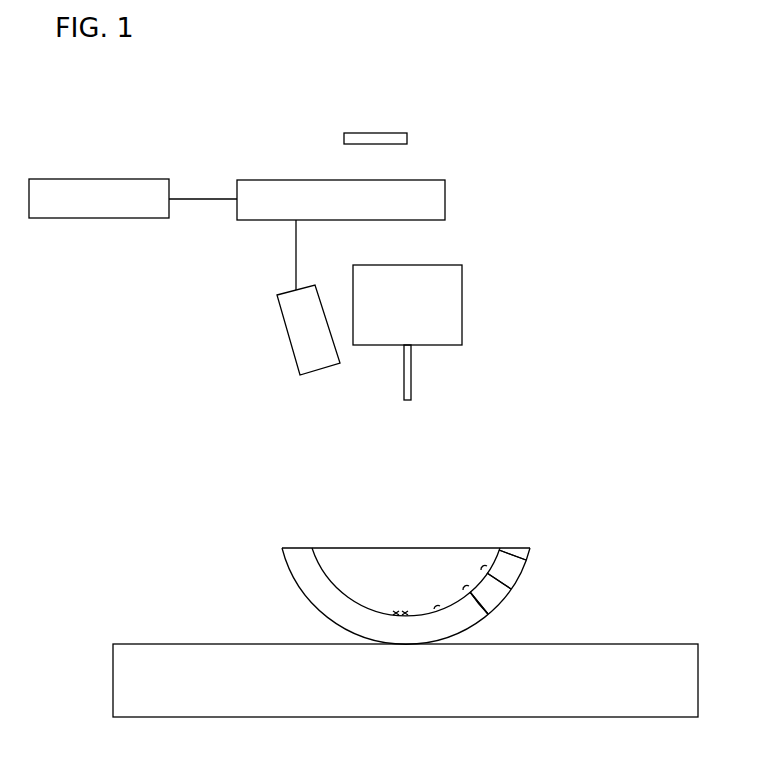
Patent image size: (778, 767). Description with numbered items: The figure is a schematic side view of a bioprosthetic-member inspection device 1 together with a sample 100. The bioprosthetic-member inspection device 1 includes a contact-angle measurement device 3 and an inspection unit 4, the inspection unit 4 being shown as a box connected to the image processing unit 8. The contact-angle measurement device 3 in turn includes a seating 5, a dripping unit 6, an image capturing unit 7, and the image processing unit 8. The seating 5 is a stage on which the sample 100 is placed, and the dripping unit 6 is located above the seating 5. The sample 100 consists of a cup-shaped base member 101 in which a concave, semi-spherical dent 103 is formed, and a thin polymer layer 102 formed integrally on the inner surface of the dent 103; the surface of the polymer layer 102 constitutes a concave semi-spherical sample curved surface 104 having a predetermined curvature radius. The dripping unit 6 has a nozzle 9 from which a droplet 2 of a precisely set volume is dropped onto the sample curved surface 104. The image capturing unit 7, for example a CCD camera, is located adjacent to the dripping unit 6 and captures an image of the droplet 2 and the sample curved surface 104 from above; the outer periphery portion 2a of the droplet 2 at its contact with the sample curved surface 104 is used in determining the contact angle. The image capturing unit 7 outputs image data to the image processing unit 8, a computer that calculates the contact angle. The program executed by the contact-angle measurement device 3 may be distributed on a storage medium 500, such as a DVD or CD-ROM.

The bioprosthetic-member inspection device 1 is at (508, 272).
The droplet 2 is at (405, 613).
The outer periphery portion 2a is at (395, 613).
The contact-angle measurement device 3 is at (477, 203).
The inspection unit 4 is at (135, 178).
The seating 5 is at (197, 643).
The dripping unit 6 is at (415, 265).
The image capturing unit 7 is at (322, 293).
The image processing unit 8 is at (302, 178).
The nozzle 9 is at (411, 362).
The sample 100 is at (305, 548).
The base member 101 is at (512, 563).
The polymer layer 102 is at (513, 585).
The dent 103 is at (507, 605).
The sample curved surface 104 is at (473, 619).
The storage medium 500 is at (383, 133).